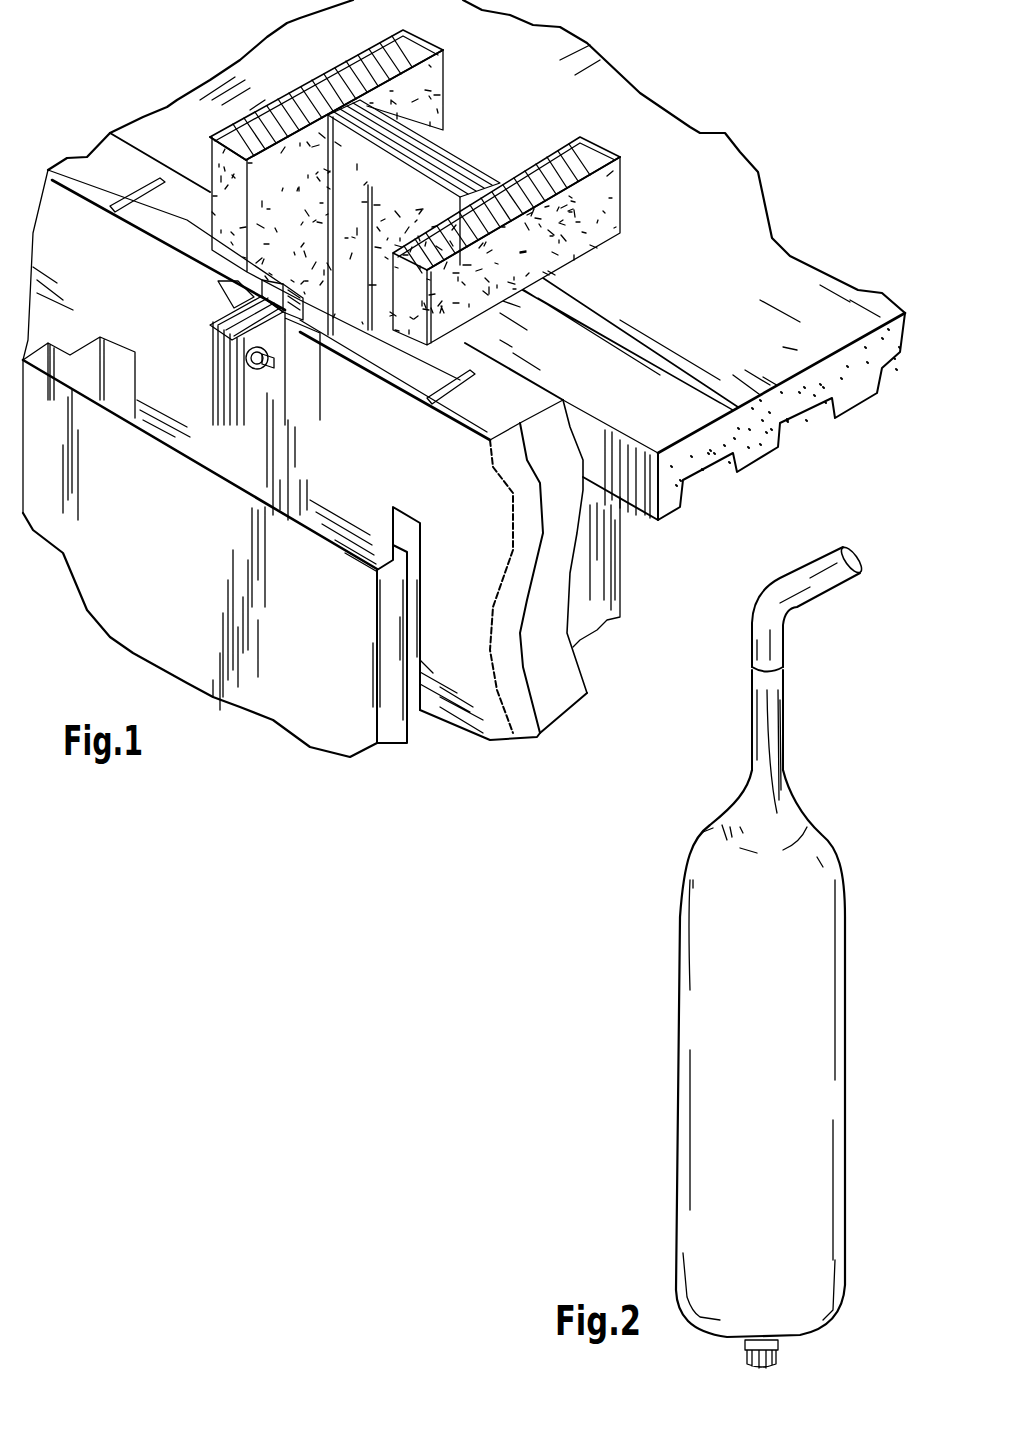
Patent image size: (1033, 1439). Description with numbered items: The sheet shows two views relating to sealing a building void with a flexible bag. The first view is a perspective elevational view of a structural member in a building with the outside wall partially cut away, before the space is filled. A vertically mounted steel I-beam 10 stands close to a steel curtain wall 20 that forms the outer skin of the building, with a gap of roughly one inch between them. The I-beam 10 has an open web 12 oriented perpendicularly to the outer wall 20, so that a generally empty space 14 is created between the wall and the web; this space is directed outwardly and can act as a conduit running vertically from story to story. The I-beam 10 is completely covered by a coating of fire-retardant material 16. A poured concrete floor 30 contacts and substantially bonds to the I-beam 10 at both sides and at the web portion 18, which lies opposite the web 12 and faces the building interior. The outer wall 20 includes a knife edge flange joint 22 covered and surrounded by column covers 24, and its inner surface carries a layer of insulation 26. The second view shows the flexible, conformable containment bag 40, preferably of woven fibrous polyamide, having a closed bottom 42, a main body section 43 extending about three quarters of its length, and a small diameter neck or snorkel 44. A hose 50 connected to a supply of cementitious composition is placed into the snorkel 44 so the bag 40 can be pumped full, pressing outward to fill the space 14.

In FIG. 1, the I-beam 10 is at (410, 50).
In FIG. 1, the open web 12 is at (353, 187).
In FIG. 1, the space 14 is at (267, 106).
In FIG. 1, the fire-retardant material 16 is at (458, 180).
In FIG. 1, the web portion 18 is at (427, 80).
In FIG. 1, the curtain wall 20 is at (95, 227).
In FIG. 1, the knife edge flange joint 22 is at (222, 328).
In FIG. 1, the column covers 24 is at (130, 558).
In FIG. 1, the insulation 26 is at (103, 190).
In FIG. 1, the poured concrete floor 30 is at (783, 347).
In FIG. 2, the containment bag 40 is at (787, 870).
In FIG. 2, the closed bottom 42 is at (783, 1363).
In FIG. 2, the main body section 43 is at (723, 1008).
In FIG. 2, the snorkel 44 is at (768, 730).
In FIG. 2, the hose 50 is at (797, 583).